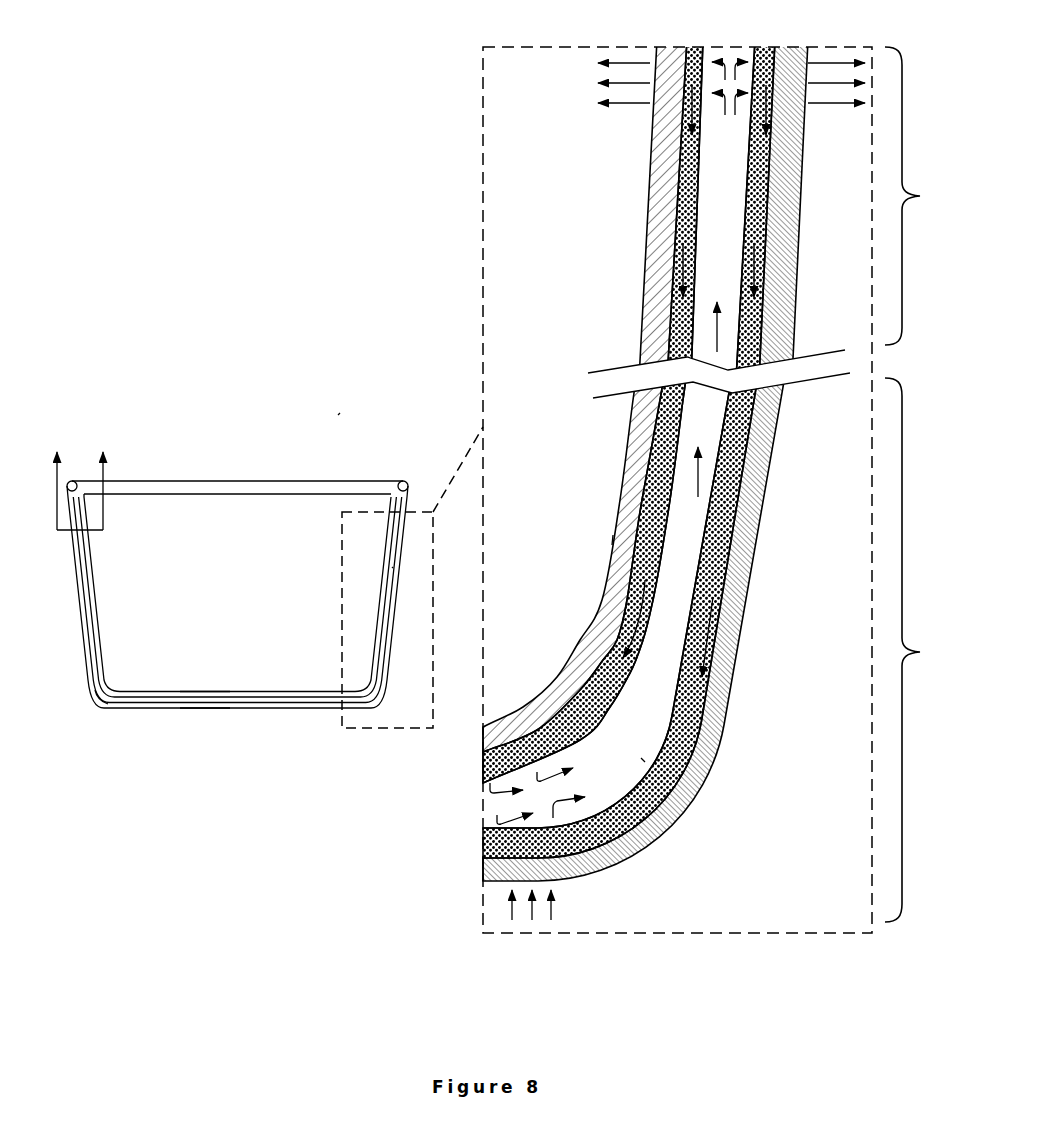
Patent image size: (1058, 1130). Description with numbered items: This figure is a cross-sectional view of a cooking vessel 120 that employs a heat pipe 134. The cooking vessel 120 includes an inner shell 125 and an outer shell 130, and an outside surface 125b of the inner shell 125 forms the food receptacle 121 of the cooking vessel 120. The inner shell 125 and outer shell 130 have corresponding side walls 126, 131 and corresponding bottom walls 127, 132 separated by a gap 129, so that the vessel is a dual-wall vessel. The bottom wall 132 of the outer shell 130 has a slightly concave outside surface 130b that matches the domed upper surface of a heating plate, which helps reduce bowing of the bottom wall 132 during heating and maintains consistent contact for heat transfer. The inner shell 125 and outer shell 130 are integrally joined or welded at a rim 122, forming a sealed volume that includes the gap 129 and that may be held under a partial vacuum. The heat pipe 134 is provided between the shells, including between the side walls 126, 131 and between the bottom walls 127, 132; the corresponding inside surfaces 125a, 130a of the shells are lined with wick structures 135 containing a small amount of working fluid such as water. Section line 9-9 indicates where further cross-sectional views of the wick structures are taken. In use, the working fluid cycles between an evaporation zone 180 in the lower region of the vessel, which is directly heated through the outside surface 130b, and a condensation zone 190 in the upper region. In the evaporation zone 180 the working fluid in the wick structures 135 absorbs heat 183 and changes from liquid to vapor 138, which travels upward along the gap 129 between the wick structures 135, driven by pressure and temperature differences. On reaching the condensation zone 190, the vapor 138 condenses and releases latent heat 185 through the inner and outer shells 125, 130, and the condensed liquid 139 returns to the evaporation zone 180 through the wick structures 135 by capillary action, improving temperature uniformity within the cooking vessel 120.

The section line 9- 9 is at (79, 479).
The cooking vessel 120 is at (338, 415).
The food receptacle 121 is at (200, 530).
The rim 122 is at (397, 490).
The inner shell 125 is at (92, 590).
The inside surface of inner shell 125a is at (683, 197).
The outside surface of inner shell 125b is at (613, 535).
The side wall of inner shell 126 is at (92, 555).
The bottom wall of inner shell 127 is at (203, 690).
The gap 129 is at (100, 698).
The outer shell 130 is at (82, 637).
The inside surface of outer shell 130a is at (767, 215).
The outside surface of bottom wall of outer shell 130b is at (490, 885).
The side wall of outer shell 131 is at (75, 572).
The bottom wall of outer shell 132 is at (212, 707).
The heat pipe 134 is at (392, 567).
The wick structures 135 is at (763, 175).
The vapor 138 is at (723, 67).
The condensed liquid 139 is at (683, 265).
The evaporation zone 180 is at (923, 650).
The heat 183 is at (510, 920).
The latent heat 185 is at (630, 62).
The condensation zone 190 is at (923, 196).